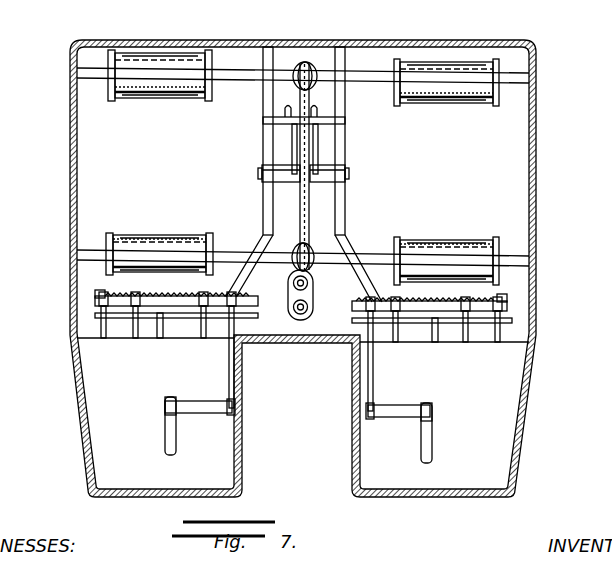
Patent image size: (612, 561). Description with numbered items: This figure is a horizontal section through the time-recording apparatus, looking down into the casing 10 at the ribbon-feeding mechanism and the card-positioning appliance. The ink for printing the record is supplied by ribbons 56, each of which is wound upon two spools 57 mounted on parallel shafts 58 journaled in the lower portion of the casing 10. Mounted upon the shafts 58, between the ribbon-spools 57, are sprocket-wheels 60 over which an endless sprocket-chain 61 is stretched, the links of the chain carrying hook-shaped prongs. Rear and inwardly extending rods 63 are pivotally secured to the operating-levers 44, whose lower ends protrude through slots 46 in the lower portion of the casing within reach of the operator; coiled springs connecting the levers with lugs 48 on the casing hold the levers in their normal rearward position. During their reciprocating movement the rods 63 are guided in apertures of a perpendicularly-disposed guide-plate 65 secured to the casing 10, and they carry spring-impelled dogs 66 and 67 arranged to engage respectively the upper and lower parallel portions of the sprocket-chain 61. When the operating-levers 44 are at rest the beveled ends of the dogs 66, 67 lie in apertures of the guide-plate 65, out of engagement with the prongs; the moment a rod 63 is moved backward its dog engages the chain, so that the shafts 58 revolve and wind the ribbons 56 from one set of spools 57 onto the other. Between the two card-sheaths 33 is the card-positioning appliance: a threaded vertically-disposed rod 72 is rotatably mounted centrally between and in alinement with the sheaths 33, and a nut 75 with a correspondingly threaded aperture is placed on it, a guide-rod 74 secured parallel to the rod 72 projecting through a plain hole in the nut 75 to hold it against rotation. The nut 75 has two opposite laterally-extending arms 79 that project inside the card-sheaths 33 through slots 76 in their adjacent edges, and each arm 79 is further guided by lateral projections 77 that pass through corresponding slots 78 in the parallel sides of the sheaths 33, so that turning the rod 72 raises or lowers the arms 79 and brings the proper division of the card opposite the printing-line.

The casing 10 is at (321, 268).
The card-sheath 33 is at (176, 296).
The operating-lever 44 is at (170, 400).
The slot 46 is at (165, 433).
The lug 48 is at (158, 325).
The inking-ribbon 56 is at (140, 98).
The ribbon-spool 57 is at (178, 92).
The spool shaft 58 is at (232, 80).
The sprocket-wheel 60 is at (320, 66).
The sprocket-chain 61 is at (312, 208).
The rod 63 is at (265, 152).
The guide-plate 65 is at (263, 121).
The spring-impelled dog 66 is at (318, 142).
The spring-impelled dog 67 is at (263, 168).
The threaded rod 72 is at (299, 312).
The guide-rod 74 is at (293, 283).
The nut 75 is at (313, 292).
The slot 76 is at (246, 316).
The lateral projection 77 is at (136, 296).
The slot 78 is at (97, 300).
The arm 79 is at (364, 288).